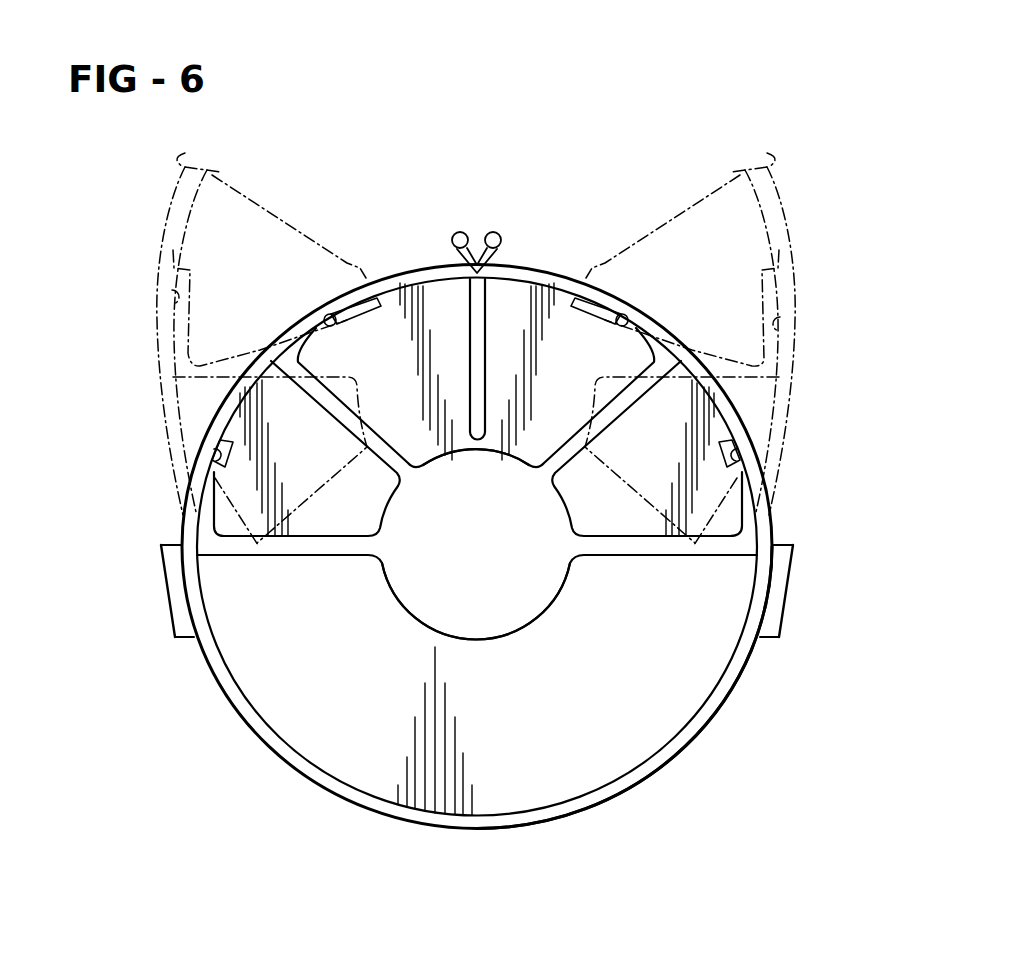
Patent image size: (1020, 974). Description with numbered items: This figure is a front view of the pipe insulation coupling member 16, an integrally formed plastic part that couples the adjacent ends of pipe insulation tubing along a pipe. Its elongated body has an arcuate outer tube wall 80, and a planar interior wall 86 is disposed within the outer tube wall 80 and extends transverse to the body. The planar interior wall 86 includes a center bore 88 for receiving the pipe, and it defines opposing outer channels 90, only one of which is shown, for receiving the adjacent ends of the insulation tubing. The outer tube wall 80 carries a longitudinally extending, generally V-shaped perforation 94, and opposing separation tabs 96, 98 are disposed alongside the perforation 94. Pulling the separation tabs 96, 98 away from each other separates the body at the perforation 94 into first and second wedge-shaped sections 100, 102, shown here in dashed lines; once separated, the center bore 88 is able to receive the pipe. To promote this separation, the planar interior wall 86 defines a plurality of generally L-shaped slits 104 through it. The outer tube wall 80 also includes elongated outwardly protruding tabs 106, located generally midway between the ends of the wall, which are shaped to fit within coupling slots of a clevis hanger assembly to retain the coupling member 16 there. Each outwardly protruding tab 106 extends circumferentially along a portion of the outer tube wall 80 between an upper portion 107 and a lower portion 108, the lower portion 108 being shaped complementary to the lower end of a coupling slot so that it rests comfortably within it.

The pipe insulation coupling member 16 is at (390, 818).
The arcuate outer tube wall 80 is at (306, 770).
The planar interior wall 86 is at (526, 724).
The center bore 88 is at (552, 607).
The outer channel 90 is at (592, 790).
The perforation 94 is at (500, 266).
The separation tab 96 is at (458, 232).
The separation tab 98 is at (494, 232).
The first wedge-shaped section 100 is at (180, 248).
The second wedge-shaped section 102 is at (793, 235).
The slit 104 is at (332, 316).
The outwardly protruding tab 106 is at (165, 610).
The upper portion 107 is at (161, 545).
The lower portion 108 is at (182, 640).